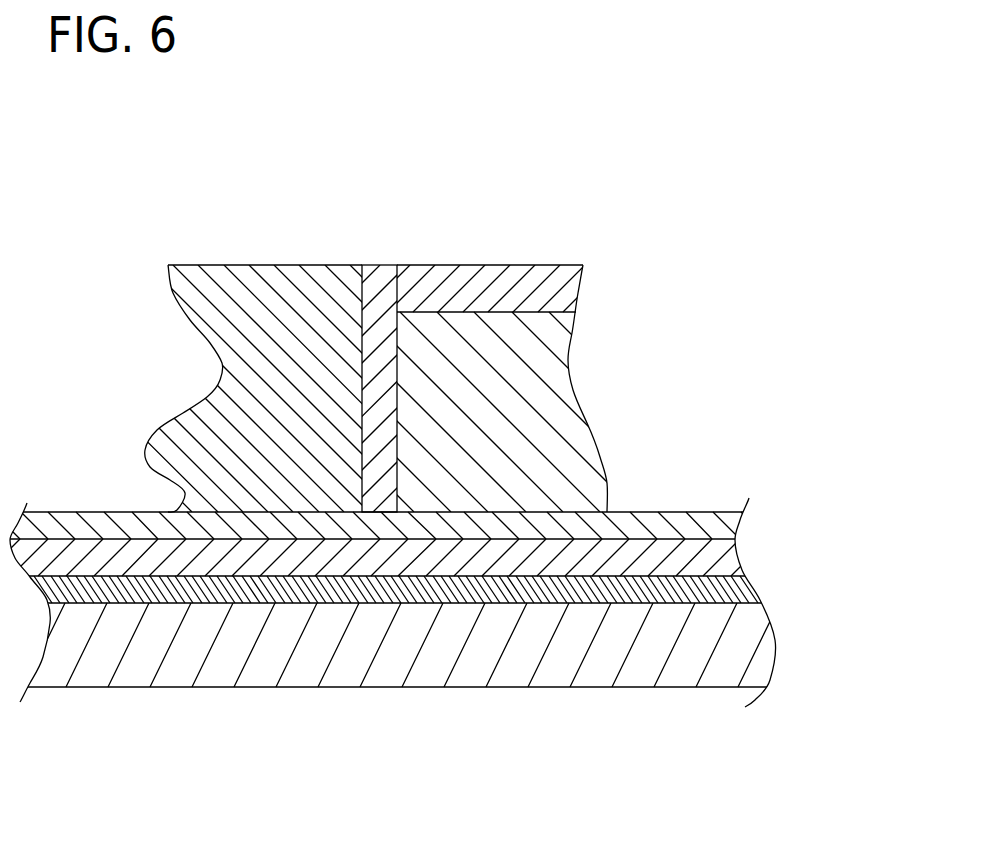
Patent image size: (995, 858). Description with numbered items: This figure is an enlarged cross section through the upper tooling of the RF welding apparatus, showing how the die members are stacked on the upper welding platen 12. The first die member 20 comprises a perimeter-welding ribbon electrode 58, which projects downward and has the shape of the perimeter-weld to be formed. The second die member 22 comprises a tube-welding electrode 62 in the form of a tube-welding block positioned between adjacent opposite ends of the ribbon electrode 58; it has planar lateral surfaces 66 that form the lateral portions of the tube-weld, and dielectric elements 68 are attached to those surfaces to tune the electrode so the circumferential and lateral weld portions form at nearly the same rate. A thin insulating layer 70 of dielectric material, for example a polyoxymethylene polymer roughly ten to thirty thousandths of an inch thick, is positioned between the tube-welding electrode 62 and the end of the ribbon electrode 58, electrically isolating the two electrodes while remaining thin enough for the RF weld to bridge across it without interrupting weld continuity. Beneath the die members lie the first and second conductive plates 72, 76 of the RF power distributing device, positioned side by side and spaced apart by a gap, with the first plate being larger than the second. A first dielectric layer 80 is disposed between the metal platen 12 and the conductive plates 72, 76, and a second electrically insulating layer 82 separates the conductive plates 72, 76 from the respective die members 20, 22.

The upper welding platen 12 is at (685, 702).
The first die member 20 is at (160, 311).
The second die member 22 is at (500, 337).
The ribbon electrode 58 is at (220, 373).
The tube-welding electrode 62 is at (580, 398).
The planar lateral surface 66 is at (525, 313).
The dielectric element 68 is at (492, 270).
The insulating layer 70 is at (380, 270).
The first conductive plate 72 is at (442, 542).
The second conductive plate 76 is at (732, 563).
The first dielectric layer 80 is at (747, 592).
The second electrically insulating layer 82 is at (702, 517).